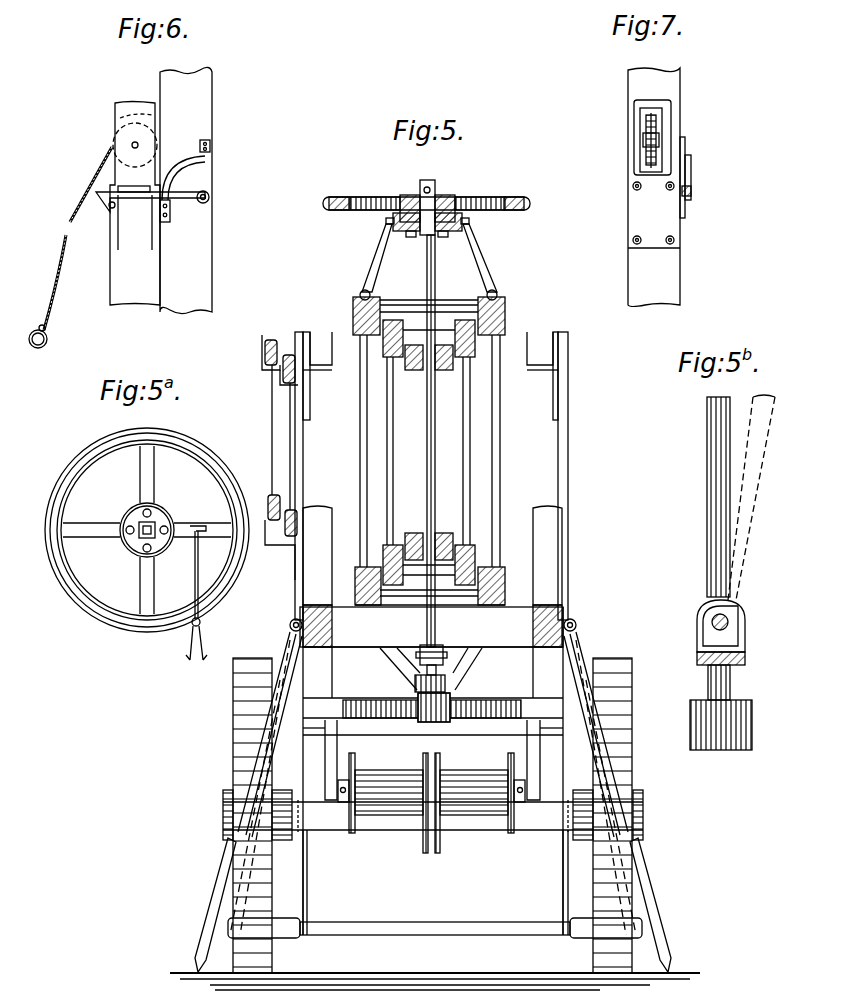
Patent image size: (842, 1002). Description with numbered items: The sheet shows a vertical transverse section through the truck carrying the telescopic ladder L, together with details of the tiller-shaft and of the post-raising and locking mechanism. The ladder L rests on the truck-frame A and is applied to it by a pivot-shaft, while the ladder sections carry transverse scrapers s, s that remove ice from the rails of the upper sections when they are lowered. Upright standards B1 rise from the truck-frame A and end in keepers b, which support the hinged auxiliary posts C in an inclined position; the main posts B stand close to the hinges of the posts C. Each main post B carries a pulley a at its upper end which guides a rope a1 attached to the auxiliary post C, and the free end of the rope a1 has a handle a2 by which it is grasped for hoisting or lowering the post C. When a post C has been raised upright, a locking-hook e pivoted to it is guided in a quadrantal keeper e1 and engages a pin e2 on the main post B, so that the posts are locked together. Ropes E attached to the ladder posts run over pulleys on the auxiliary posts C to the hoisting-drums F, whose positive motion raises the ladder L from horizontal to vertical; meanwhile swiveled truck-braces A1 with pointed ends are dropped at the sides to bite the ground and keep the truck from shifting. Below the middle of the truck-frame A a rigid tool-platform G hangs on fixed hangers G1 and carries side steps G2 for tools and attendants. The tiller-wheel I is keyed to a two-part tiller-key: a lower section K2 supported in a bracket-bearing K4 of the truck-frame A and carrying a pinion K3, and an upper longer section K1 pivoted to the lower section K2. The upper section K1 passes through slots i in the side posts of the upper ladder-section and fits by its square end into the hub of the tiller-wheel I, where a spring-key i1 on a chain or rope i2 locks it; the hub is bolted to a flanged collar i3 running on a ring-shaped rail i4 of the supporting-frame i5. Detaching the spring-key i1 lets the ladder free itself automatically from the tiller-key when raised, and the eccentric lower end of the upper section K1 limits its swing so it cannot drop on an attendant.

In FIG. 6, the pulley a is at (118, 136).
In FIG. 7, the pulley a is at (646, 135).
In FIG. 6, the rope a1 is at (78, 238).
In FIG. 6, the handle a2 is at (55, 334).
In FIG. 6, the locking-hook e is at (152, 204).
In FIG. 7, the locking-hook e is at (691, 192).
In FIG. 6, the quadrantal keeper e1 is at (183, 178).
In FIG. 7, the quadrantal keeper e1 is at (696, 177).
In FIG. 6, the pin e2 is at (110, 210).
In FIG. 6, the main post B is at (135, 204).
In FIG. 7, the main post B is at (654, 266).
In FIG. 6, the auxiliary post C is at (186, 190).
In FIG. 7, the auxiliary post C is at (664, 185).
In FIG. 5A, the tiller-wheel I is at (147, 530).
In FIG. 5, the tiller-wheel I is at (426, 192).
In FIG. 5A, the upper section of tiller-key K1 is at (143, 540).
In FIG. 5B, the upper section of tiller-key K1 is at (723, 523).
In FIG. 5, the upper section of tiller-key K1 is at (446, 430).
In FIG. 5B, the lower section of tiller-key K2 is at (732, 677).
In FIG. 5, the lower section of tiller-key K2 is at (445, 668).
In FIG. 5, the pinion K3 is at (470, 738).
In FIG. 5, the bracket-bearing K4 is at (418, 682).
In FIG. 5, the slot i is at (429, 478).
In FIG. 5A, the spring-key i1 is at (202, 639).
In FIG. 5, the spring-key i1 is at (431, 190).
In FIG. 5A, the chain or rope i2 is at (192, 572).
In FIG. 5, the flanged collar i3 is at (427, 228).
In FIG. 5, the ring-shaped rail i4 is at (386, 222).
In FIG. 5, the supporting-frame i5 is at (516, 262).
In FIG. 5, the transverse scraper s is at (390, 322).
In FIG. 5, the telescopic ladder L is at (360, 482).
In FIG. 5, the keeper b is at (410, 456).
In FIG. 5, the standard B1 is at (300, 460).
In FIG. 5, the truck-frame A is at (431, 720).
In FIG. 5, the truck-brace A1 is at (429, 796).
In FIG. 5, the rope E is at (402, 818).
In FIG. 5, the hoisting-drum F is at (433, 815).
In FIG. 5, the tool-platform G is at (435, 933).
In FIG. 5, the hanger G1 is at (435, 882).
In FIG. 5, the side step G2 is at (435, 942).